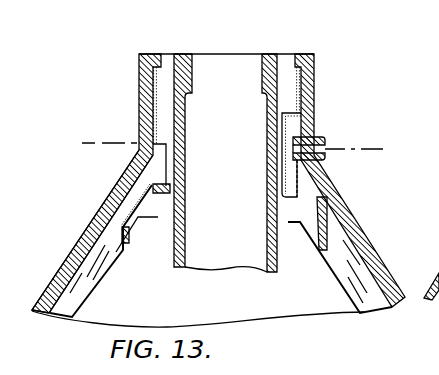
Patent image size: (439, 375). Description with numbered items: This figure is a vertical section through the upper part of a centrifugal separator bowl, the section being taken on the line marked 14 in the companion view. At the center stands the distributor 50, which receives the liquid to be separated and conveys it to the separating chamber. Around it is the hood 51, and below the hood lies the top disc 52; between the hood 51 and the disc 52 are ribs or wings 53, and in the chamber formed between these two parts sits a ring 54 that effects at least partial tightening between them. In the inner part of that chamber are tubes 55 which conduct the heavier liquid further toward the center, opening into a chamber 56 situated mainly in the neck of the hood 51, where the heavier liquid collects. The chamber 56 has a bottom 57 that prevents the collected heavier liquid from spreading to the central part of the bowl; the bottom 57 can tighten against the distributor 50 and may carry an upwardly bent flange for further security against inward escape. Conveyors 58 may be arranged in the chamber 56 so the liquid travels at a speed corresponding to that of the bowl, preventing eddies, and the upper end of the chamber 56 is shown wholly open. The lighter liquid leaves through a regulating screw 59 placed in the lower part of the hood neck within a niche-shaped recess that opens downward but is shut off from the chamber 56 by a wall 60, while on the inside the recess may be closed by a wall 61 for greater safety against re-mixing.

The section line 14- 14 is at (99, 140).
The distributor 50 is at (268, 57).
The hood 51 is at (140, 87).
The top disc 52 is at (107, 260).
The ribs or wings 53 is at (352, 265).
The ring 54 is at (123, 243).
The tubes 55 is at (123, 183).
The chamber 56 is at (165, 78).
The bottom 57 is at (163, 196).
The conveyors 58 is at (160, 163).
The regulating screw 59 is at (317, 137).
The wall 60 is at (292, 172).
The wall 61 is at (303, 185).